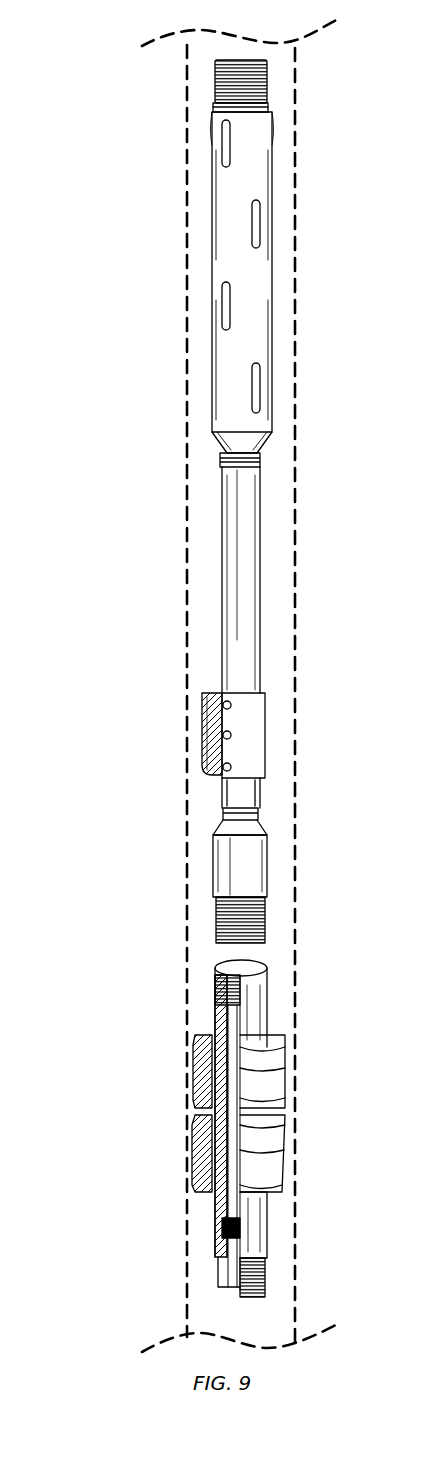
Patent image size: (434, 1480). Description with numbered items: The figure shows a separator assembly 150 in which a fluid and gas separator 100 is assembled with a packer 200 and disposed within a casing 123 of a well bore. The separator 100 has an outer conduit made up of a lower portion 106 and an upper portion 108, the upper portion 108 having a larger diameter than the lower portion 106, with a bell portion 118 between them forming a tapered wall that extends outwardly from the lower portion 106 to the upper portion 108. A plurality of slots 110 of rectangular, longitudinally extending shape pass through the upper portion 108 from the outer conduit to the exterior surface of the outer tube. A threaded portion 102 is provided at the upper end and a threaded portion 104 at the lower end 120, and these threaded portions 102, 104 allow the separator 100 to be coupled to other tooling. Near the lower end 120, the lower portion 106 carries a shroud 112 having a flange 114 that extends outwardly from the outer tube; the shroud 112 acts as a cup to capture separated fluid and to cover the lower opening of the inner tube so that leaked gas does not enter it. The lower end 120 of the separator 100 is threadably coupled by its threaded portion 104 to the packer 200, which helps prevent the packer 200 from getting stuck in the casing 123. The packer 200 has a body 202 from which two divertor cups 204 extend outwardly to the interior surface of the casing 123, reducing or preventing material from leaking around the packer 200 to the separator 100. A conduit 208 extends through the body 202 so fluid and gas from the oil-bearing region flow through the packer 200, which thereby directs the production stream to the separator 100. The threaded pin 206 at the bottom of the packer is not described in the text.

The separator 100 is at (163, 400).
The threaded portion 102 is at (216, 78).
The threaded portion 104 is at (266, 918).
The lower portion 106 is at (221, 517).
The upper portion 108 is at (272, 171).
The slots 110 is at (225, 145).
The shroud 112 is at (257, 736).
The flange 114 is at (205, 723).
The bell portion 118 is at (268, 446).
The lower end 120 is at (222, 948).
The casing 123 is at (296, 579).
The separator assembly 150 is at (118, 35).
The packer 200 is at (173, 1088).
The body 202 is at (268, 1004).
The divertor cups 204 is at (288, 1071).
The lower threaded pin 206 is at (268, 1276).
The conduit 208 is at (230, 1292).